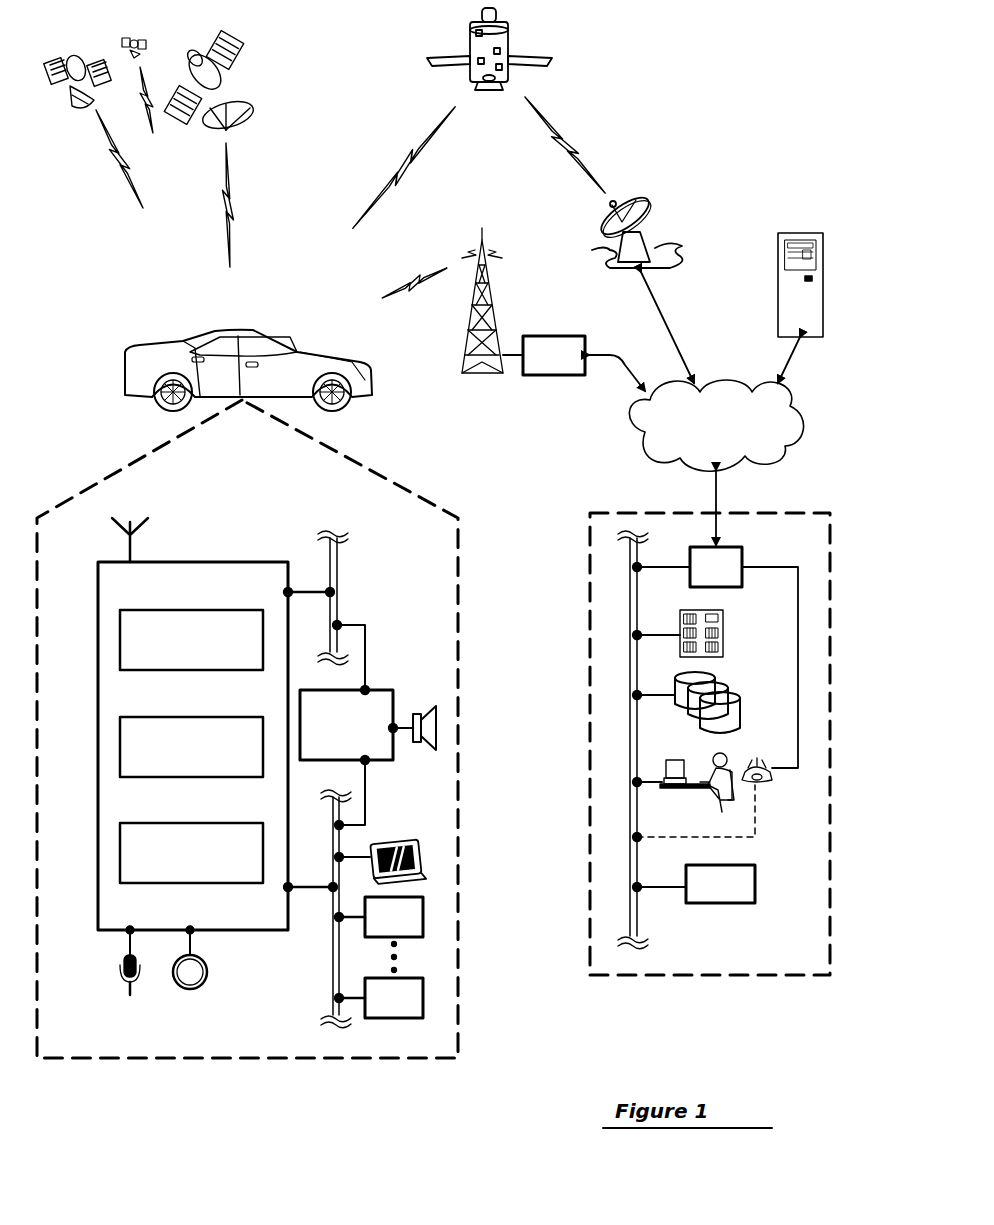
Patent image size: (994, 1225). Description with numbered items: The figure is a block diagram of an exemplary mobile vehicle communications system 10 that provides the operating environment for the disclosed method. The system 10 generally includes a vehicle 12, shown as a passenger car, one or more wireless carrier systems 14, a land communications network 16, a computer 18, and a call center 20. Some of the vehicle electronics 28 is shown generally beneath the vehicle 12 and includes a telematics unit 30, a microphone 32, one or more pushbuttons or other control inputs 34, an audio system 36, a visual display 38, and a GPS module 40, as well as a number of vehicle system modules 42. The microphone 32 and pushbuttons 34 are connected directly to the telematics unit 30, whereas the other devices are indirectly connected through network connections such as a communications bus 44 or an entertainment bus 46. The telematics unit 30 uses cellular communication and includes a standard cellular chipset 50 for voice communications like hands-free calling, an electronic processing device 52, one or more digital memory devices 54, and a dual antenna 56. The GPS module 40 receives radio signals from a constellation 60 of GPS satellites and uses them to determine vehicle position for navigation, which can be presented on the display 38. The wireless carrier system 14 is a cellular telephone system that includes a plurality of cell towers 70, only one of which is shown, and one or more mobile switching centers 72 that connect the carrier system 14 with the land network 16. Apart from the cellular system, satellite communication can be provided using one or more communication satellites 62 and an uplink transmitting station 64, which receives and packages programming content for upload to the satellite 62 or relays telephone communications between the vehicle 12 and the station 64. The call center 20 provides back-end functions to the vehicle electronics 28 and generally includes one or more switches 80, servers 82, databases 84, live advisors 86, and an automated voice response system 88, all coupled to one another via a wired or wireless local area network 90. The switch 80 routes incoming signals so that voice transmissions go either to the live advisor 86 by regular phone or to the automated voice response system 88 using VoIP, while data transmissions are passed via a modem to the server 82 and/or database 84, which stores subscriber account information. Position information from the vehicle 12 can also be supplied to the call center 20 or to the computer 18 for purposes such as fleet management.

The mobile vehicle communications system 10 is at (742, 52).
The vehicle 12 is at (125, 385).
The wireless carrier system 14 is at (470, 396).
The land communications network 16 is at (716, 462).
The computer 18 is at (823, 298).
The call center 20 is at (697, 975).
The vehicle electronics 28 is at (237, 1058).
The telematics unit 30 is at (248, 562).
The microphone 32 is at (120, 971).
The pushbutton 34 is at (208, 970).
The audio system 36 is at (368, 725).
The visual display 38 is at (393, 840).
The GPS module 40 is at (379, 917).
The vehicle system module 42 is at (379, 998).
The communications bus 44 is at (331, 966).
The entertainment bus 46 is at (338, 565).
The cellular chipset 50 is at (191, 640).
The electronic processing device 52 is at (191, 747).
The digital memory device 54 is at (191, 853).
The dual antenna 56 is at (128, 549).
The constellation of GPS satellites 60 is at (292, 104).
The communication satellite 62 is at (510, 38).
The uplink transmitting station 64 is at (660, 245).
The cell tower 70 is at (492, 300).
The mobile switching center 72 is at (574, 363).
The switch 80 is at (716, 657).
The server 82 is at (723, 632).
The database 84 is at (740, 710).
The live advisor 86 is at (700, 802).
The automated voice response system 88 is at (694, 884).
The local area network 90 is at (640, 933).